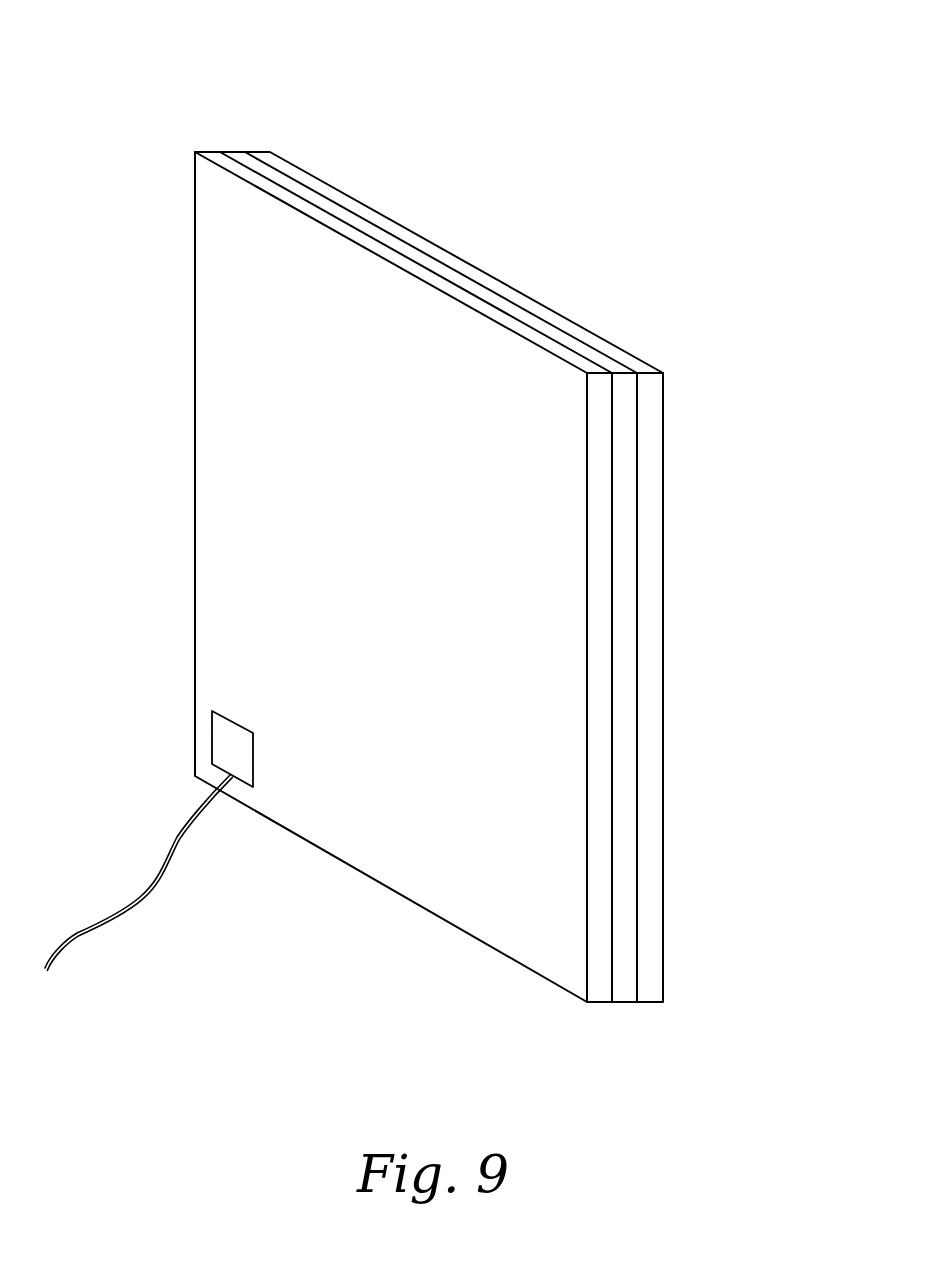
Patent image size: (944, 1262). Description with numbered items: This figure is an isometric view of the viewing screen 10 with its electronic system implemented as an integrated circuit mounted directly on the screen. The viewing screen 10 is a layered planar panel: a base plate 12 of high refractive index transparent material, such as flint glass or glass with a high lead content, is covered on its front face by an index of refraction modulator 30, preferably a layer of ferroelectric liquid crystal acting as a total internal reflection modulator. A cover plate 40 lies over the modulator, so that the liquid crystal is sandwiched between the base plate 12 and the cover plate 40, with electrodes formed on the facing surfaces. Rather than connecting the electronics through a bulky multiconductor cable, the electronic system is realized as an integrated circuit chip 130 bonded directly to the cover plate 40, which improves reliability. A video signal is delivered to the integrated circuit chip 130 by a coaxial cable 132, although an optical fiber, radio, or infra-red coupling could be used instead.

The viewing screen 10 is at (547, 192).
The base plate 12 is at (267, 152).
The index of refraction modulator 30 is at (238, 152).
The cover plate 40 is at (210, 152).
The integrated circuit chip 130 is at (213, 738).
The coaxial cable 132 is at (102, 923).